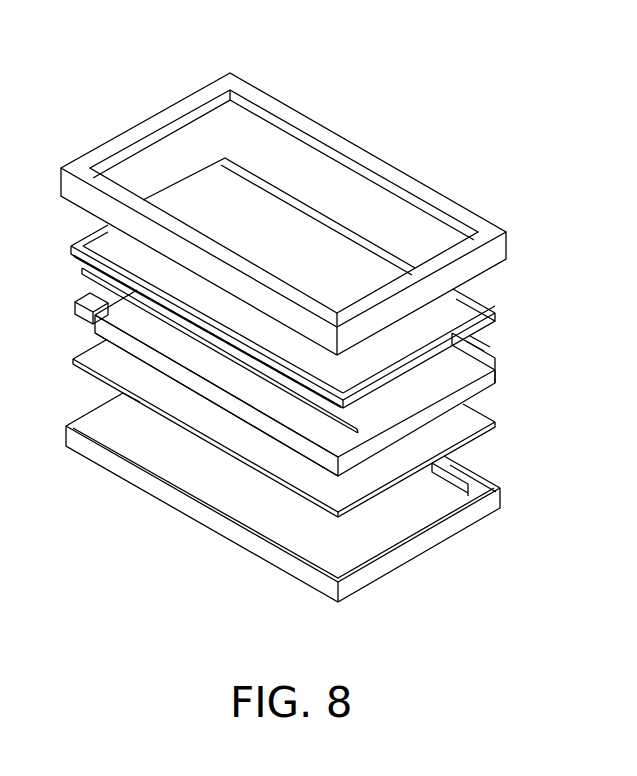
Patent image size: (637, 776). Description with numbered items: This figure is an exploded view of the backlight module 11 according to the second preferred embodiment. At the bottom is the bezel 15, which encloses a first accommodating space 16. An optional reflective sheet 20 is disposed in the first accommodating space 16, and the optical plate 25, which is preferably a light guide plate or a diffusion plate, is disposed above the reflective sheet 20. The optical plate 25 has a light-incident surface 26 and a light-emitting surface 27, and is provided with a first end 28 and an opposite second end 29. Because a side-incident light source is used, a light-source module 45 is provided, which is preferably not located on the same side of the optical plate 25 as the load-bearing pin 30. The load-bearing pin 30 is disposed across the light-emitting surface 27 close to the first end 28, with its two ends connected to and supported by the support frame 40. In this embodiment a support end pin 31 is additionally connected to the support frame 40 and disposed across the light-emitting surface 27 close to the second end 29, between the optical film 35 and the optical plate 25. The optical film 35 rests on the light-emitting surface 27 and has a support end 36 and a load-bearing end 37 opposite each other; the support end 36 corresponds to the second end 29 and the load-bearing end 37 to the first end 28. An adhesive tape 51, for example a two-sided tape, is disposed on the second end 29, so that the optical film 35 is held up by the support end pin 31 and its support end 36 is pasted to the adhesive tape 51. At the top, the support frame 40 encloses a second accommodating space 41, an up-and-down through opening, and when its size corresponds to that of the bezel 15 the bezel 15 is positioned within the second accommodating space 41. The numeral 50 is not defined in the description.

The backlight module 11 is at (147, 63).
The bezel 15 is at (440, 540).
The first accommodating space 16 is at (455, 492).
The reflective sheet 20 is at (488, 427).
The optical plate 25 is at (486, 393).
The light-incident surface 26 is at (100, 289).
The light-emitting surface 27 is at (447, 367).
The first end 28 is at (203, 385).
The second end 29 is at (485, 345).
The load-bearing pin 30 is at (333, 430).
The support end pin 31 is at (488, 352).
The optical film 35 is at (460, 306).
The support end 36 is at (297, 195).
The load-bearing end 37 is at (70, 247).
The support frame 40 is at (475, 223).
The second accommodating space 41 is at (353, 197).
The light-source module 45 is at (77, 301).
The circuit board 50 is at (93, 328).
The adhesive tape 51 is at (498, 375).